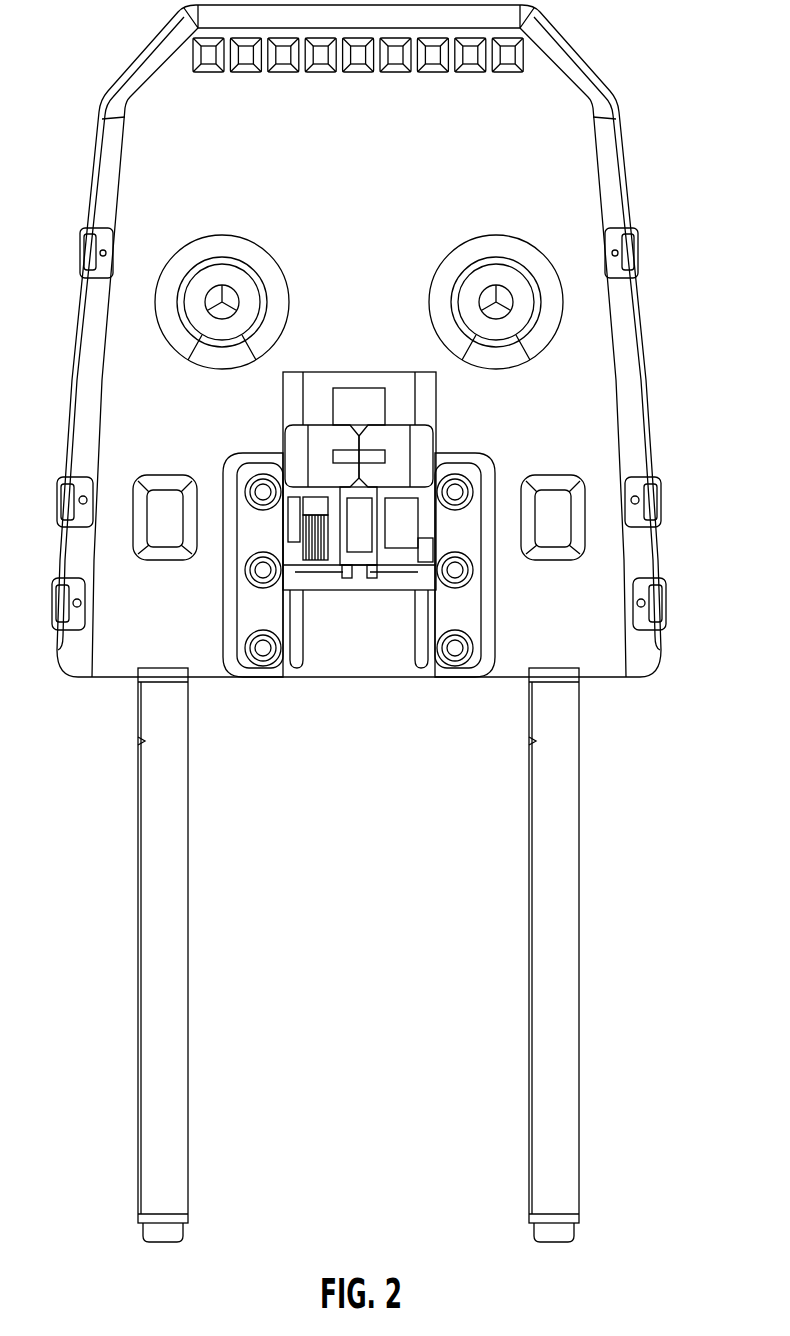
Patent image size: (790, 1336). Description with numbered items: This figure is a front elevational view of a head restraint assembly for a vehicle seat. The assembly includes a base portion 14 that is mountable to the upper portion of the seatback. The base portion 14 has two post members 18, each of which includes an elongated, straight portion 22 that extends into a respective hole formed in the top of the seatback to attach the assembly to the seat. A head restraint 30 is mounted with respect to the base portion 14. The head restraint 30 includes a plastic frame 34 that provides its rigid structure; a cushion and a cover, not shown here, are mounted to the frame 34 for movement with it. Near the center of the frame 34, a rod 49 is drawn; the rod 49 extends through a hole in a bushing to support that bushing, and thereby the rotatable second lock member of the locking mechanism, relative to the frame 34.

The base portion 14 is at (374, 623).
The post members 18 is at (357, 955).
The straight portion 22 is at (152, 883).
The head restraint 30 is at (374, 341).
The frame 34 is at (547, 100).
The rod 49 is at (397, 535).